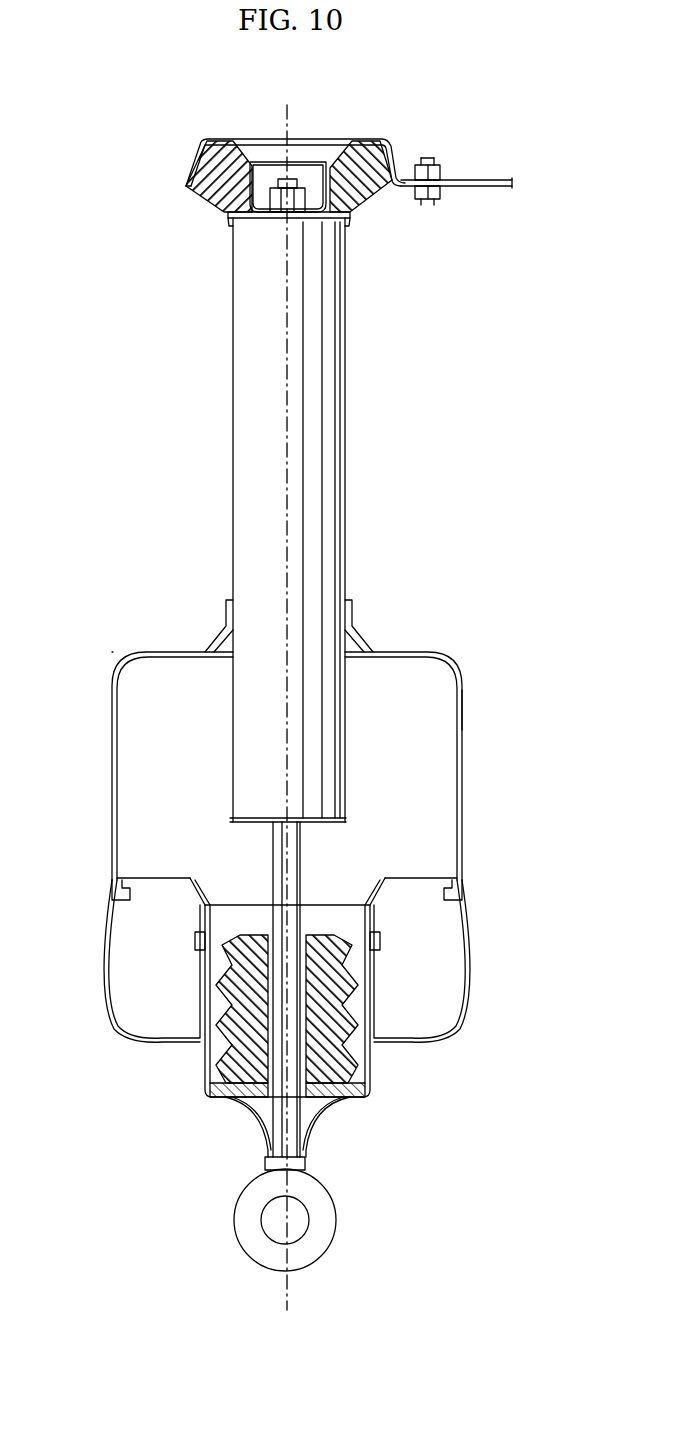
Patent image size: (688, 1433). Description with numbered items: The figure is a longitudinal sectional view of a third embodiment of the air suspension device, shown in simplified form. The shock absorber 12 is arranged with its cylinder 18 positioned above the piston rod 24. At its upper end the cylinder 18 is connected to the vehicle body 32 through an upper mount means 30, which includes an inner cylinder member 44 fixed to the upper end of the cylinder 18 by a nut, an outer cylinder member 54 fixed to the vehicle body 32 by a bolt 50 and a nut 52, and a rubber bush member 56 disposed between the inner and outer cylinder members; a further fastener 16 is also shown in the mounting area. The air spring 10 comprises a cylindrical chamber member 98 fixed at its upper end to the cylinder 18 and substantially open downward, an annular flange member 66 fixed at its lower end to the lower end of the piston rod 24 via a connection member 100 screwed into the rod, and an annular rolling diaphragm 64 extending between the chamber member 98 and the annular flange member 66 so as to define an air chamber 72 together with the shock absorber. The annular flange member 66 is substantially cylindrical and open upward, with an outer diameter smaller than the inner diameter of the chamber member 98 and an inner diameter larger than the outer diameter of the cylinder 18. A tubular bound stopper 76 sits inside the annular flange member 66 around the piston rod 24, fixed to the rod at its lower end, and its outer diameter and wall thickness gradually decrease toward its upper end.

The air spring 10 is at (127, 643).
The shock absorber 12 is at (364, 402).
The mounting bolt 16 is at (315, 116).
The cylinder 18 is at (236, 405).
The piston rod 24 is at (300, 856).
The upper mount means 30 is at (200, 152).
The vehicle body 32 is at (494, 178).
The inner cylinder member 44 is at (256, 160).
The bolt 50 is at (434, 199).
The nut 52 is at (435, 165).
The outer cylinder member 54 is at (202, 160).
The rubber bush member 56 is at (226, 196).
The annular rolling diaphragm 64 is at (466, 982).
The annular flange member 66 is at (206, 1082).
The air chamber 72 is at (135, 750).
The tubular bound stopper 76 is at (355, 1055).
The cylindrical chamber member 98 is at (462, 710).
The connection member 100 is at (326, 1200).